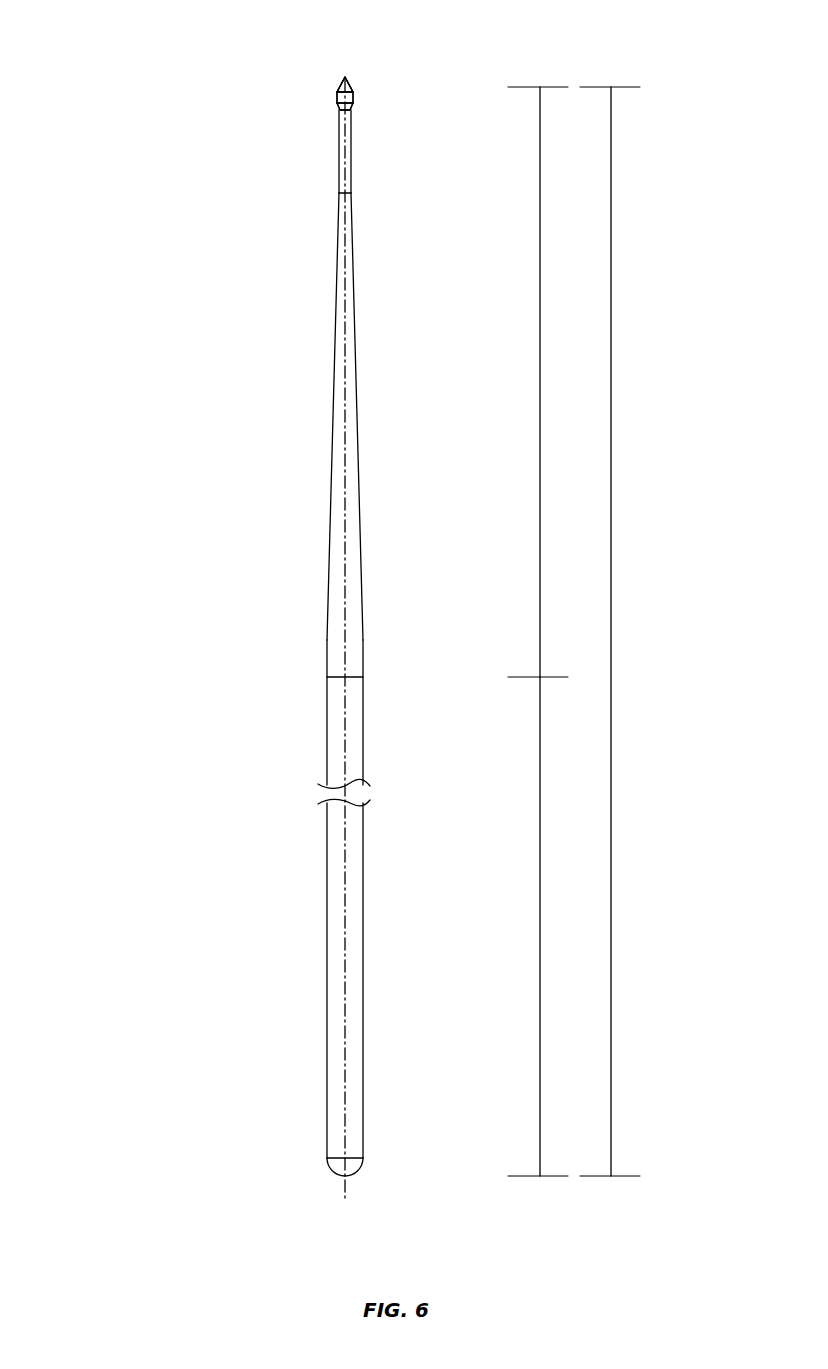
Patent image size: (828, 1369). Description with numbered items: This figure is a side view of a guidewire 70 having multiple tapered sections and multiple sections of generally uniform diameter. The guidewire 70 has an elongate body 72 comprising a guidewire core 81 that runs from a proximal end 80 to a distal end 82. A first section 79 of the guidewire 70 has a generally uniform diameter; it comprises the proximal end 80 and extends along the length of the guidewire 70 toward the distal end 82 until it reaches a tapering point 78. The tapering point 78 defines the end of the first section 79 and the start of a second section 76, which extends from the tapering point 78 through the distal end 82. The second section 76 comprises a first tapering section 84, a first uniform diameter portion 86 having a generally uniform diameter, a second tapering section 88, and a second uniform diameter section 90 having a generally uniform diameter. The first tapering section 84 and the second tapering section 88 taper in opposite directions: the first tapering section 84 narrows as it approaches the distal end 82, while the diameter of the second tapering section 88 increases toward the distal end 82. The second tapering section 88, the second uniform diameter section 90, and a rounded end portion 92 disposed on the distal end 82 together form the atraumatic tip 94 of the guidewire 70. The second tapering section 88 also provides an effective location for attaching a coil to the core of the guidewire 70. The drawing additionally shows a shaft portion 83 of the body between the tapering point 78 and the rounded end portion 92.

The guidewire 70 is at (256, 930).
The elongate body 72 is at (611, 738).
The second section 76 is at (540, 345).
The tapering point 78 is at (378, 677).
The first section 79 is at (540, 968).
The proximal end 80 is at (345, 658).
The guidewire core 81 is at (342, 1047).
The distal end 82 is at (349, 82).
The shaft 83 is at (327, 704).
The first tapering section 84 is at (337, 299).
The first uniform diameter portion 86 is at (339, 193).
The second tapering section 88 is at (340, 108).
The second uniform diameter section 90 is at (338, 96).
The rounded end portion 92 is at (343, 79).
The atraumatic tip 94 is at (137, 15).